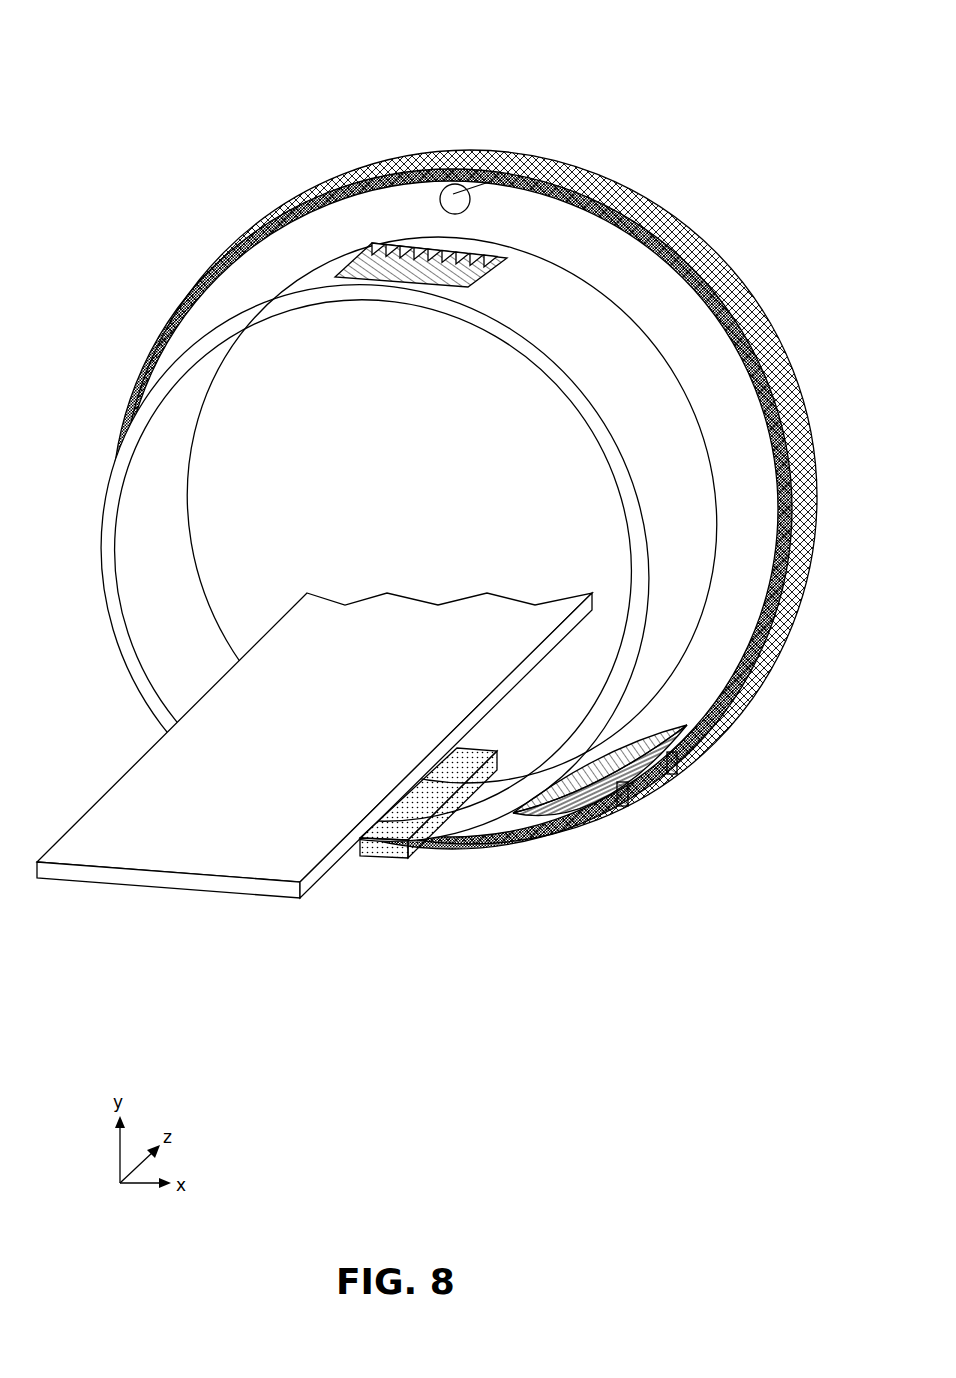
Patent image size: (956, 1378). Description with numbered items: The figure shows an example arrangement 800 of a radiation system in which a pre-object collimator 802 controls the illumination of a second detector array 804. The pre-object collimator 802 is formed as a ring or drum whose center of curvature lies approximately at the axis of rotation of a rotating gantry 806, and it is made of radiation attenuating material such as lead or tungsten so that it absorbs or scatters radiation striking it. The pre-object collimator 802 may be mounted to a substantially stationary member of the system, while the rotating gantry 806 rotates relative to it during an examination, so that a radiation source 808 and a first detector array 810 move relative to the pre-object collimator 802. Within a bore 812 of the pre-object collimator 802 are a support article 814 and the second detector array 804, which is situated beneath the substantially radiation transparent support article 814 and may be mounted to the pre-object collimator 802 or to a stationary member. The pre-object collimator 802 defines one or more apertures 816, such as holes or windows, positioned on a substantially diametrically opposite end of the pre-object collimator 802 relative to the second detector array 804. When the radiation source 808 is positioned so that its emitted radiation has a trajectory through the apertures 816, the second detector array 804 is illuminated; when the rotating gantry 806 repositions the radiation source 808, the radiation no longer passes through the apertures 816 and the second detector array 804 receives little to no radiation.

The arrangement 800 is at (128, 40).
The pre-object collimator 802 is at (541, 321).
The second detector array 804 is at (428, 812).
The rotating gantry 806 is at (744, 300).
The radiation source 808 is at (488, 207).
The first detector array 810 is at (617, 757).
The bore 812 is at (345, 491).
The support article 814 is at (336, 690).
The apertures 816 is at (397, 238).